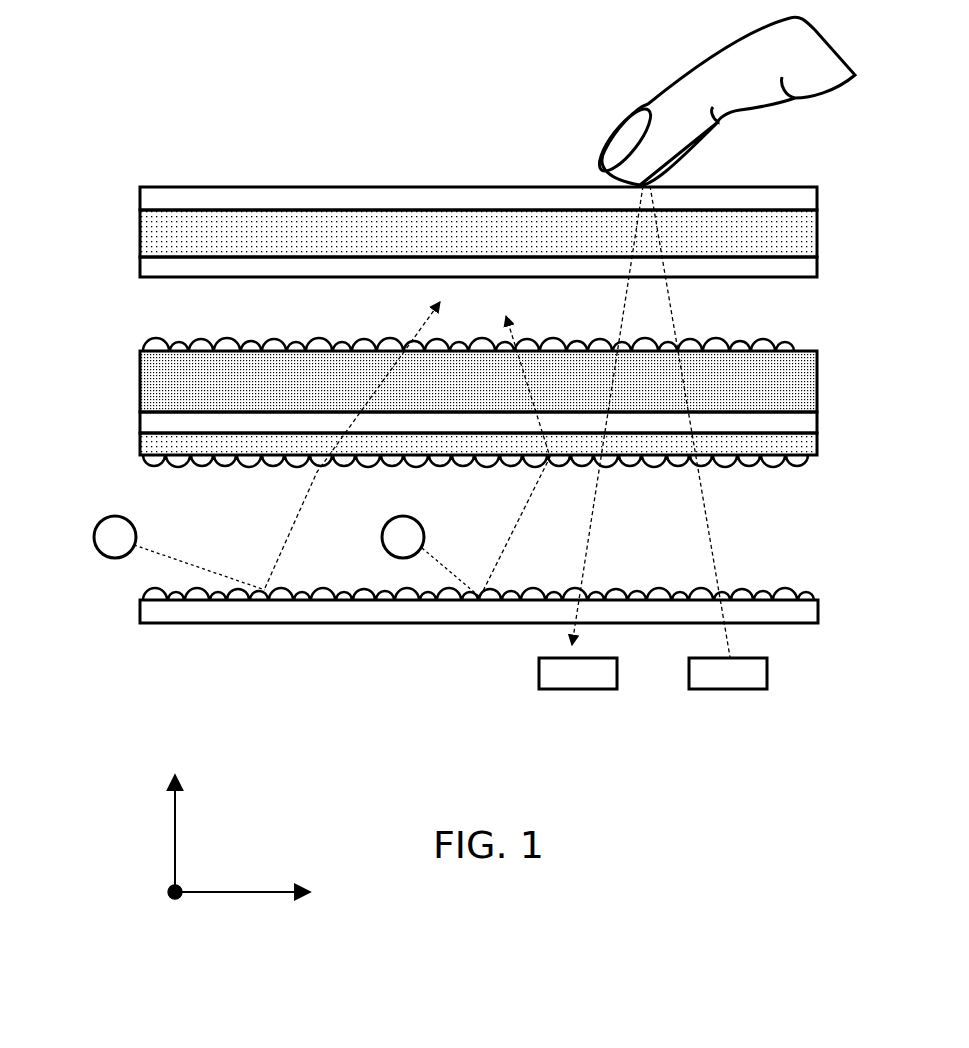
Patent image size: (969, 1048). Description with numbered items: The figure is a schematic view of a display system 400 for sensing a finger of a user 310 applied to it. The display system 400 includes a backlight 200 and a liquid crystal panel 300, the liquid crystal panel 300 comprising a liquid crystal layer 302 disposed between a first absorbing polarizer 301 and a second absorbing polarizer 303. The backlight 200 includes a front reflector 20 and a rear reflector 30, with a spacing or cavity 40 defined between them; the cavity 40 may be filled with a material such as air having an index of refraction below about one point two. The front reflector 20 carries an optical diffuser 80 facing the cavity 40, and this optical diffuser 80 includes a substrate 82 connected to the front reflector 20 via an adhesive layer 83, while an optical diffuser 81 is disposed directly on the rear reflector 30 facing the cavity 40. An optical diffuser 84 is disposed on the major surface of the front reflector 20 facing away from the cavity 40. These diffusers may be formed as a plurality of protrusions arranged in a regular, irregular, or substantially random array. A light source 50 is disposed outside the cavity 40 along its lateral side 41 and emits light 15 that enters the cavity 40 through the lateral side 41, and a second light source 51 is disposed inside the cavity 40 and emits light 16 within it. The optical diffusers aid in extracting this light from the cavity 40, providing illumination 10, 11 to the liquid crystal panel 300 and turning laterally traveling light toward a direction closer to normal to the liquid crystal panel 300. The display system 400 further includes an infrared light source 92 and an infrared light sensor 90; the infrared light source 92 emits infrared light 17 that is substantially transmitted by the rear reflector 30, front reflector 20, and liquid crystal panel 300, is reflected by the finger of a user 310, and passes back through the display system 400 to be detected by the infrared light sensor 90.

The display system 400 is at (175, 128).
The liquid crystal panel 300 is at (90, 190).
The first absorbing polarizer 301 is at (365, 200).
The liquid crystal layer 302 is at (452, 218).
The second absorbing polarizer 303 is at (516, 268).
The finger of a user 310 is at (648, 104).
The backlight 200 is at (88, 342).
The cavity 40 is at (775, 520).
The optical diffuser 84 is at (777, 338).
The front reflector 20 is at (793, 392).
The adhesive layer 83 is at (800, 425).
The substrate 82 is at (808, 443).
The optical diffuser 80 is at (780, 465).
The lateral side 41 is at (135, 500).
The light source 50 is at (112, 550).
The light source 51 is at (397, 543).
The rear reflector 30 is at (808, 614).
The optical diffuser 81 is at (783, 592).
The light 15 is at (188, 565).
The illumination 10 is at (418, 322).
The light 16 is at (443, 566).
The illumination 11 is at (513, 340).
The infrared light 17 is at (712, 555).
The infrared light sensor 90 is at (587, 682).
The infrared light source 92 is at (733, 682).